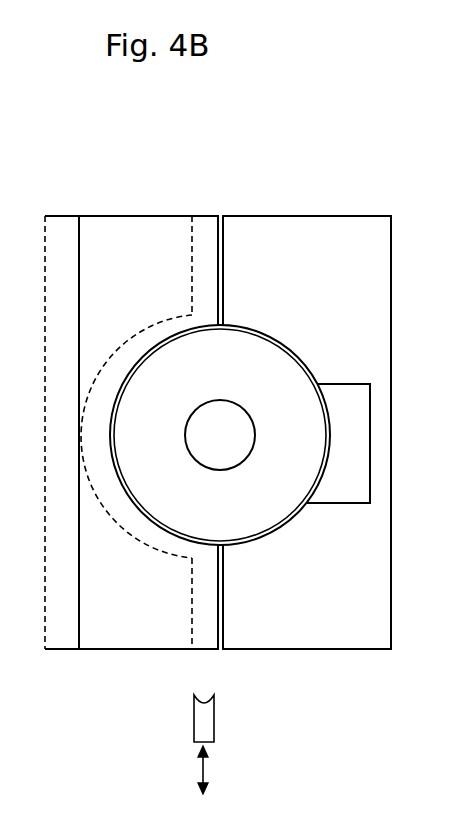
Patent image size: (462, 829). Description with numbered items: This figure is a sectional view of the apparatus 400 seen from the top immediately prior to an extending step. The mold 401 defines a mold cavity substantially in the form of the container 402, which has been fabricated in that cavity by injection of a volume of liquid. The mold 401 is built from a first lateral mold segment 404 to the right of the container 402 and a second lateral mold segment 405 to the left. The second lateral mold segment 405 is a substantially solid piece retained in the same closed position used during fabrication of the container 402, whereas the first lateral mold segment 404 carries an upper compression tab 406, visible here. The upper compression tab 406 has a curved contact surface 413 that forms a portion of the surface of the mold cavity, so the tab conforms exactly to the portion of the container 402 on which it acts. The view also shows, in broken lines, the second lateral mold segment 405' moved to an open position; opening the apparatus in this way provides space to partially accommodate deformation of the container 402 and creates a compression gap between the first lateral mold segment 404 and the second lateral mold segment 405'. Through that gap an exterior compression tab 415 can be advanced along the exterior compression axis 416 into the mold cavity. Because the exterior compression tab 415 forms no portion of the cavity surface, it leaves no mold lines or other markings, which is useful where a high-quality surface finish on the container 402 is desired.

The apparatus 400 is at (245, 453).
The mold 401 is at (225, 548).
The container 402 is at (242, 350).
The first lateral mold segment 404 is at (300, 235).
The second lateral mold segment 405 is at (131, 400).
The second lateral mold segment in open position 405' is at (96, 411).
The upper compression tab 406 is at (347, 488).
The curved contact surface 413 is at (328, 402).
The exterior compression tab 415 is at (198, 730).
The exterior compression axis 416 is at (207, 770).